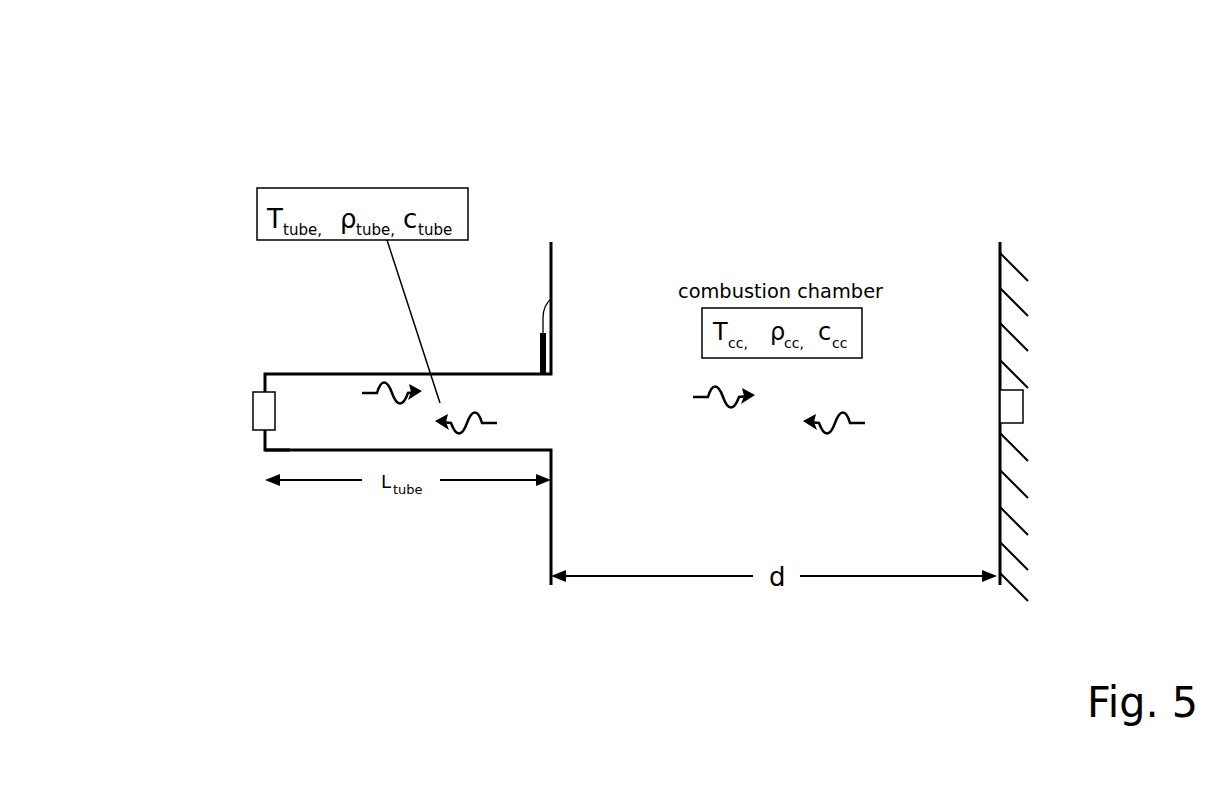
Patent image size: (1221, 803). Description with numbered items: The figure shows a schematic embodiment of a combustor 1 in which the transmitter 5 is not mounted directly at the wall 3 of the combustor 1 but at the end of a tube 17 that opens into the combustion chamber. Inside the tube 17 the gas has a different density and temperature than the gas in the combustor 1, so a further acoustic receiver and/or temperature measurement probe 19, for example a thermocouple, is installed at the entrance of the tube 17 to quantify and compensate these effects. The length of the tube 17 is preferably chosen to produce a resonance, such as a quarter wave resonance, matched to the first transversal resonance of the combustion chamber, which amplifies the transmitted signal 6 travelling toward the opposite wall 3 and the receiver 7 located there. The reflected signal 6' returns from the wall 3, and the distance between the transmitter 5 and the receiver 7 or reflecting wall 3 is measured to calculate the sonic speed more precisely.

The combustor 1 is at (1062, 226).
The wall 3 is at (550, 512).
The transmitter 5 is at (253, 408).
The transmitted signal 6 is at (544, 389).
The reflected signal 6' is at (658, 493).
The receiver 7 is at (1023, 405).
The tube 17 is at (275, 452).
The acoustic receiver and/or temperature measurement probe 19 is at (537, 345).